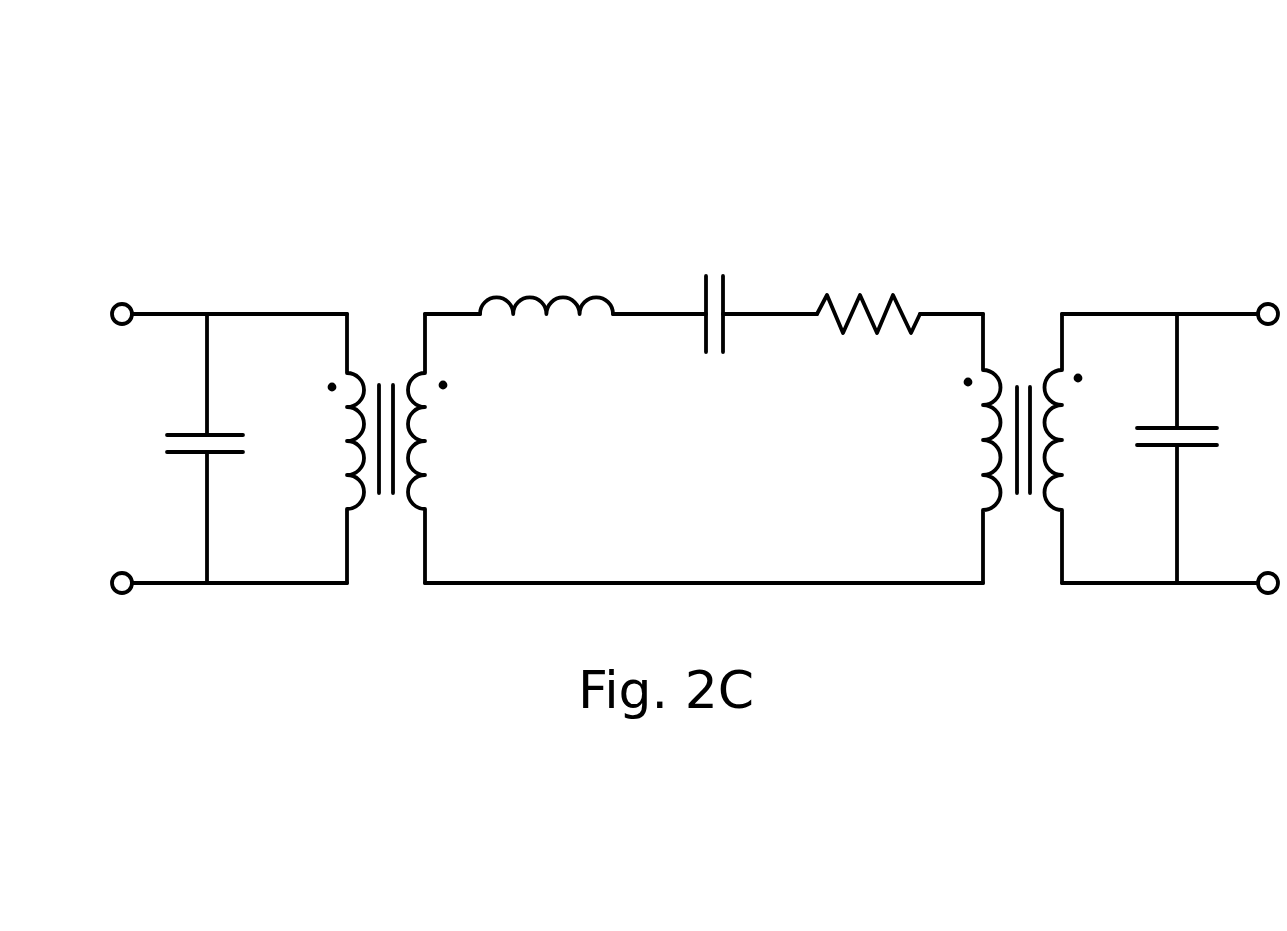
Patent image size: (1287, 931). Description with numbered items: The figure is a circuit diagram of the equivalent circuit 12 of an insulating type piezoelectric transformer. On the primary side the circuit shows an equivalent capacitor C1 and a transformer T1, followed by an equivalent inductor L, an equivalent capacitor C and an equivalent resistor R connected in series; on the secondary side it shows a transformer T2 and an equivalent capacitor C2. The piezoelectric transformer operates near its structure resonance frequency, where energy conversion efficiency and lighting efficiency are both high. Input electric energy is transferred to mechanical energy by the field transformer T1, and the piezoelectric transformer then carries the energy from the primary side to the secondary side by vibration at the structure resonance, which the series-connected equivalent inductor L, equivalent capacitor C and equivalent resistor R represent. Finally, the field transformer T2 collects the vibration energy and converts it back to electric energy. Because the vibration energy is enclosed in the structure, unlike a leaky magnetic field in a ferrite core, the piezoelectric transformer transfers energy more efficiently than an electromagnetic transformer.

The series resonant filter circuit 12 is at (800, 178).
The equivalent capacitor C1 is at (234, 448).
The transformer T1 is at (391, 391).
The equivalent inductor L is at (546, 278).
The equivalent capacitor C is at (721, 282).
The equivalent resistor R is at (868, 285).
The transformer T2 is at (1024, 387).
The equivalent capacitor C2 is at (1206, 448).